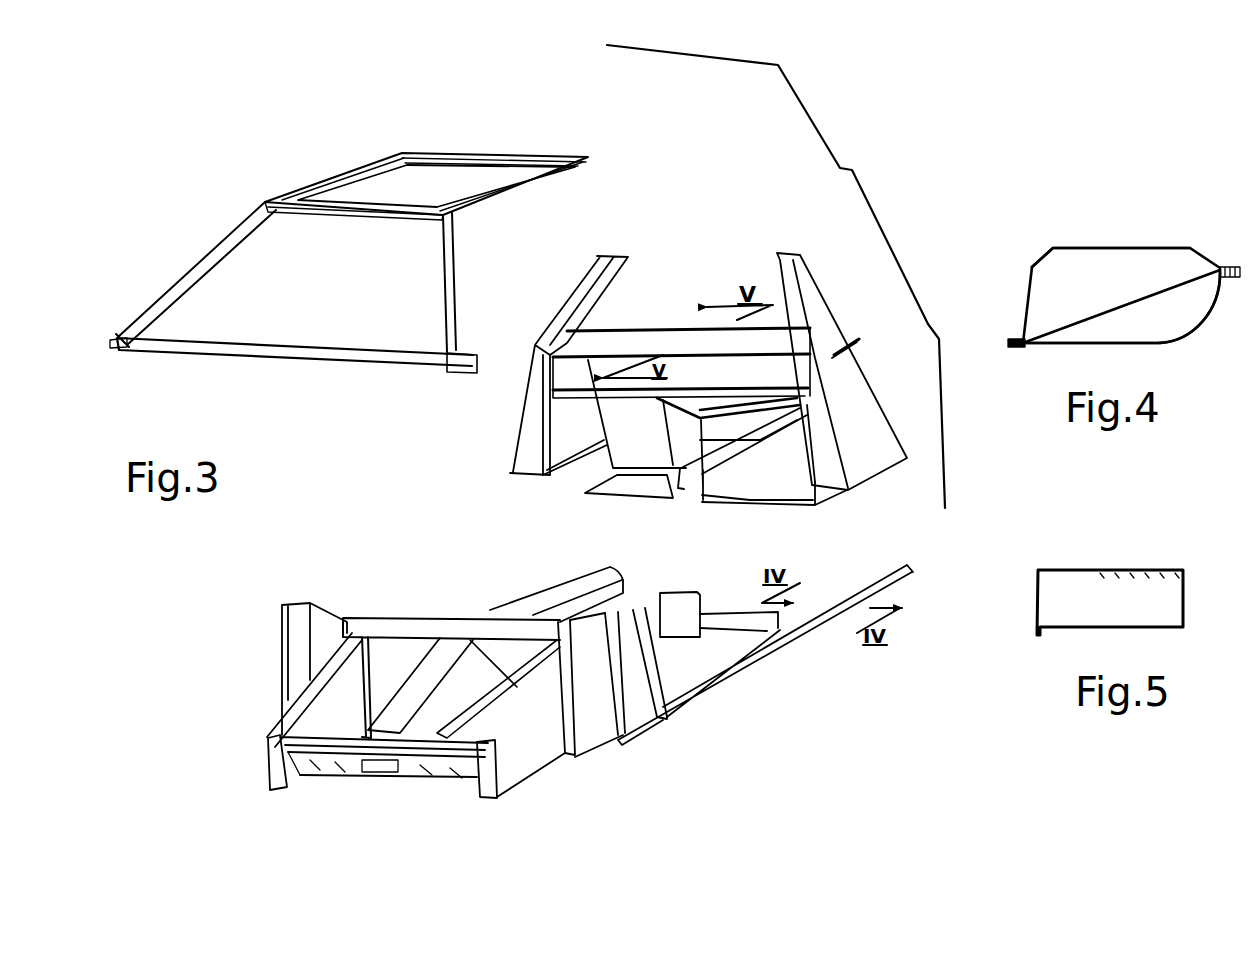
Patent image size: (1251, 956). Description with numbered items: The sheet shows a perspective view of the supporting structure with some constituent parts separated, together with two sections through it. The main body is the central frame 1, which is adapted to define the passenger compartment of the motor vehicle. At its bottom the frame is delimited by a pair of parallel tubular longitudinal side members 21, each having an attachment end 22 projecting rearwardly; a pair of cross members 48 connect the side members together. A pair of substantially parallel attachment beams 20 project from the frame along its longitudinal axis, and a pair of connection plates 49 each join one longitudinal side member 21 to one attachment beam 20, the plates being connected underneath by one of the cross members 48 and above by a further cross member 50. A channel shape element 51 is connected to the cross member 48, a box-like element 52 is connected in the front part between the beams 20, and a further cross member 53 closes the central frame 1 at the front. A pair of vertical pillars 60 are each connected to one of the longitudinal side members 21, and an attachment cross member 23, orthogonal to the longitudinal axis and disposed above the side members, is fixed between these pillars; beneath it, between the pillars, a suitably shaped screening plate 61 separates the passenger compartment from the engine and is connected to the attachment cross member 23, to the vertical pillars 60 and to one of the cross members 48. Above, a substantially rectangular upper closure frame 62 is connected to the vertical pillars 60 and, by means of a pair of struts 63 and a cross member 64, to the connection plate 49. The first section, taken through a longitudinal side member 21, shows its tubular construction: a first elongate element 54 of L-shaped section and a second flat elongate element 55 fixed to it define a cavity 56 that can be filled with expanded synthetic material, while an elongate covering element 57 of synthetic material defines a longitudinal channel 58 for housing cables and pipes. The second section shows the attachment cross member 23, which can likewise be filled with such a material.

In FIG. 3, the central frame 1 is at (717, 172).
In FIG. 3, the attachment beams 20 is at (300, 720).
In FIG. 3, the longitudinal side members 21 is at (548, 586).
In FIG. 4, the longitudinal side members 21 is at (1113, 240).
In FIG. 3, the attachment end 22 is at (873, 560).
In FIG. 3, the attachment cross member 23 is at (650, 332).
In FIG. 5, the attachment cross member 23 is at (1093, 560).
In FIG. 3, the cross members 48 is at (727, 620).
In FIG. 3, the connection plates 49 is at (320, 632).
In FIG. 3, the further cross member 50 is at (412, 628).
In FIG. 3, the channel shape element 51 is at (668, 620).
In FIG. 3, the box-like element 52 is at (437, 707).
In FIG. 3, the further cross member 53 is at (353, 747).
In FIG. 4, the first elongate element 54 is at (1068, 246).
In FIG. 4, the second flat elongate element 55 is at (1153, 295).
In FIG. 4, the cavity 56 is at (1072, 292).
In FIG. 4, the elongate covering element 57 is at (1118, 345).
In FIG. 4, the longitudinal channel 58 is at (1185, 310).
In FIG. 3, the vertical pillars 60 is at (549, 348).
In FIG. 3, the screening plate 61 is at (750, 476).
In FIG. 3, the upper closure frame 62 is at (518, 146).
In FIG. 3, the struts 63 is at (178, 290).
In FIG. 3, the cross member 64 is at (308, 353).